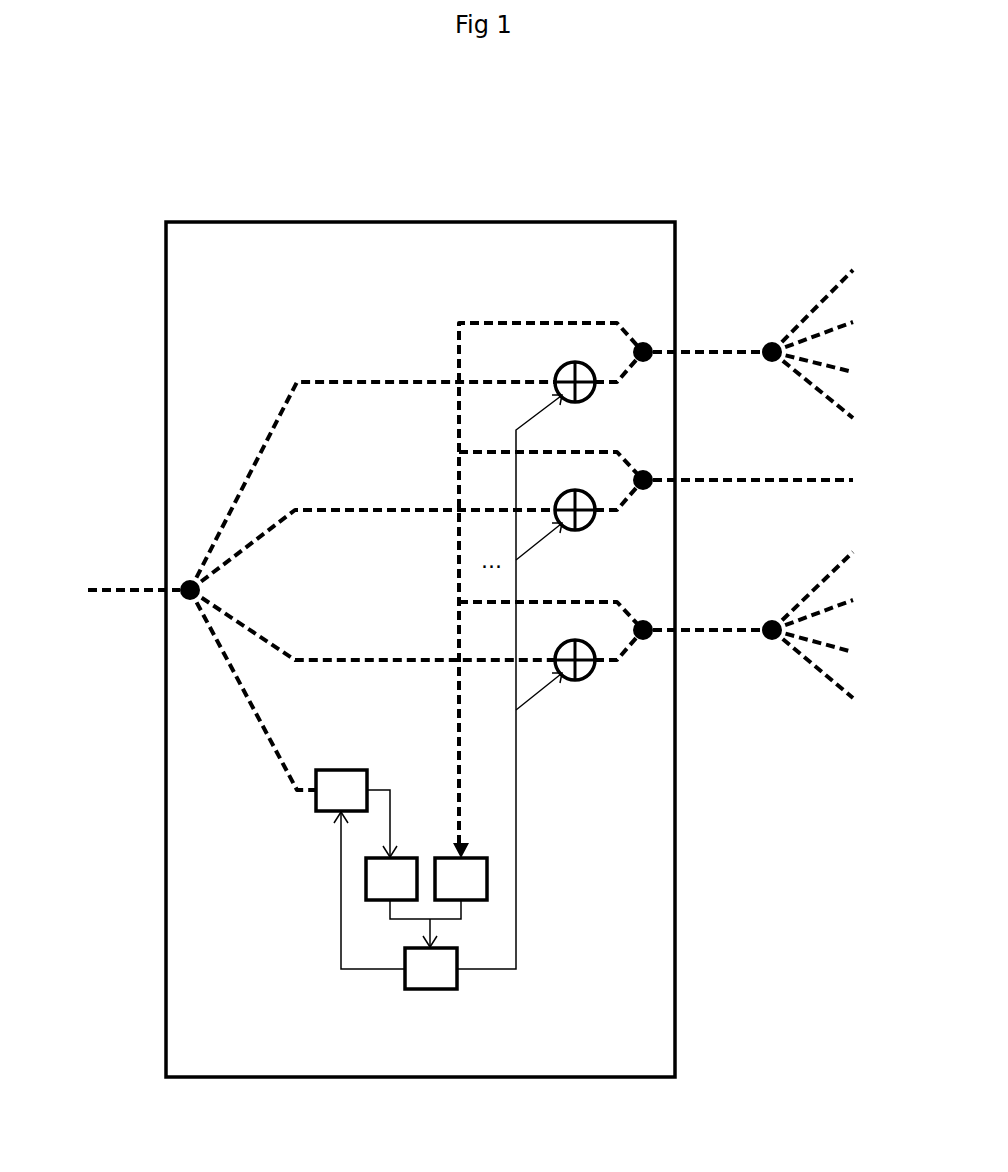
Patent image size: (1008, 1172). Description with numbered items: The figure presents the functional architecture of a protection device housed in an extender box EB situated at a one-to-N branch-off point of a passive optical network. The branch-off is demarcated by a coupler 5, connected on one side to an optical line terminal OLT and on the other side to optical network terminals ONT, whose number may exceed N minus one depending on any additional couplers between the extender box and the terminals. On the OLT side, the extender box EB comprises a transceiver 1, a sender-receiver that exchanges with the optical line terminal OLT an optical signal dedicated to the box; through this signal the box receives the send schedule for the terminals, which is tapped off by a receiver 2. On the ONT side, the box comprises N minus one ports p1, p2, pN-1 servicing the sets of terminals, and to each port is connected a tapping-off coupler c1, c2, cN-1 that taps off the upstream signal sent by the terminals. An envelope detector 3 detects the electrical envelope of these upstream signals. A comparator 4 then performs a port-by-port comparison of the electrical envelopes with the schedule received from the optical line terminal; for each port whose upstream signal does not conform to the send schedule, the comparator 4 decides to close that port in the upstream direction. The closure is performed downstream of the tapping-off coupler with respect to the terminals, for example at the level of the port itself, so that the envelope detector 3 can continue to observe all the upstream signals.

The extender box EB is at (192, 221).
The optical line terminal OLT is at (120, 563).
The optical network terminals ONT is at (769, 522).
The coupler 5 is at (188, 579).
The transceiver 1 is at (341, 793).
The receiver 2 is at (391, 881).
The envelope detector 3 is at (461, 881).
The comparator 4 is at (431, 971).
The tapping-off coupler c1 is at (640, 342).
The tapping-off coupler c2 is at (640, 470).
The tapping-off coupler cN-1 is at (640, 620).
The port p1 is at (562, 365).
The port p2 is at (574, 531).
The port pN-1 is at (574, 681).